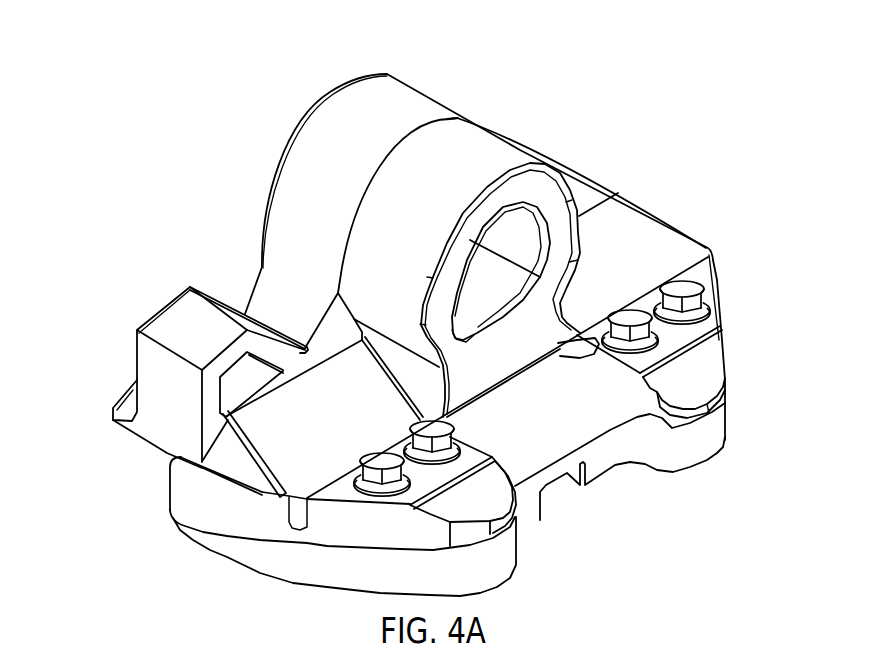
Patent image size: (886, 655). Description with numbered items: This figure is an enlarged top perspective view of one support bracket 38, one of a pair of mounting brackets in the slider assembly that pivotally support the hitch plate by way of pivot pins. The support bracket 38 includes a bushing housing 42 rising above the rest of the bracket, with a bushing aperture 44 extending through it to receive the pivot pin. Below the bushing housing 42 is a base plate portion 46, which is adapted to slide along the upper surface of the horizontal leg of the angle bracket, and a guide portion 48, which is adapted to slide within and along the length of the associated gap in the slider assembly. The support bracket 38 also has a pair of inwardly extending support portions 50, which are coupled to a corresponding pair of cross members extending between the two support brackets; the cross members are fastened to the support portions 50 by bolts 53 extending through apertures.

The support bracket 38 is at (148, 58).
The bushing housing 42 is at (441, 103).
The bushing aperture 44 is at (523, 234).
The base plate portion 46 is at (630, 315).
The guide portion 48 is at (226, 537).
The support portion 50 is at (695, 365).
The bolt 53 is at (680, 287).